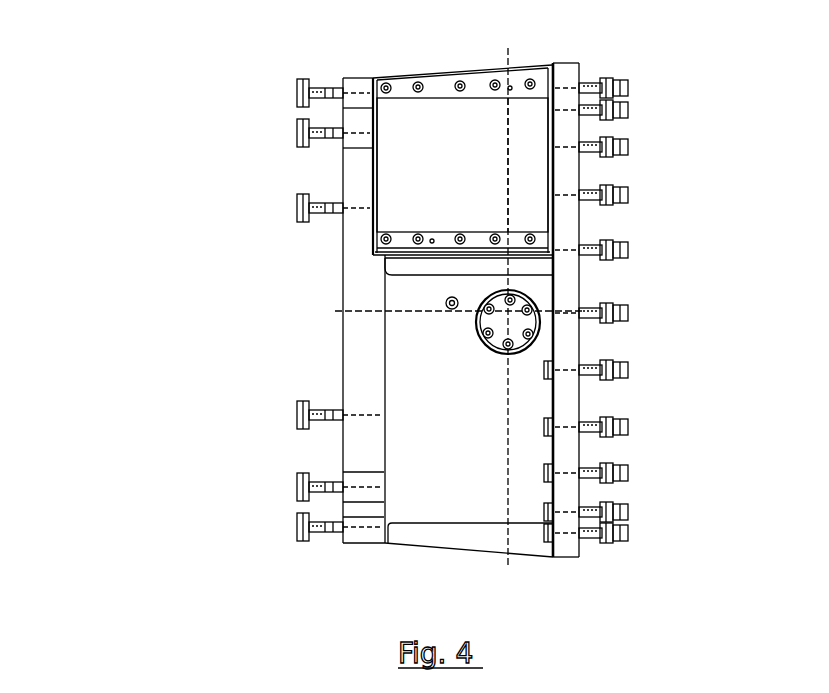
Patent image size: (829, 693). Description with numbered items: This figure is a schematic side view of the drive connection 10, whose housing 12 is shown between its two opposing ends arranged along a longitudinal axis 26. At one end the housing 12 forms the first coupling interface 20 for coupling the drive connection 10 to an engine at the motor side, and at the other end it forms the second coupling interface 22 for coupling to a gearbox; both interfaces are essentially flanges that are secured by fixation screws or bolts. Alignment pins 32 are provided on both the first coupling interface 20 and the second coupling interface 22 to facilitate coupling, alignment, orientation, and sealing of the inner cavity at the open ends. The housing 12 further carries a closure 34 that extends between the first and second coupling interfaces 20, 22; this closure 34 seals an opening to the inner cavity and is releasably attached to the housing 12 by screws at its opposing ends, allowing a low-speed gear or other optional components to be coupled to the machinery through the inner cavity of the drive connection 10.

The drive connection 10 is at (112, 62).
The housing 12 is at (482, 72).
The first coupling interface 20 is at (365, 548).
The second coupling interface 22 is at (584, 553).
The longitudinal axis 26 is at (333, 311).
The alignment pins 32 is at (292, 98).
The closure 34 is at (508, 180).